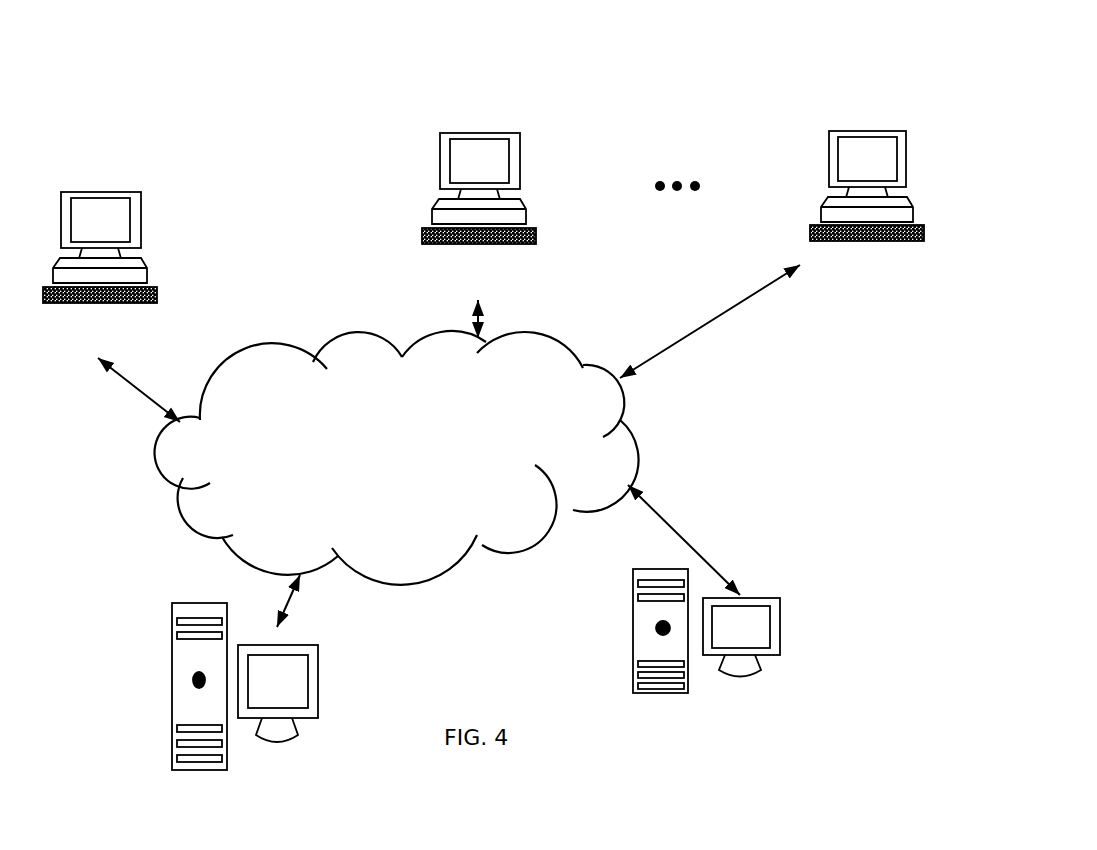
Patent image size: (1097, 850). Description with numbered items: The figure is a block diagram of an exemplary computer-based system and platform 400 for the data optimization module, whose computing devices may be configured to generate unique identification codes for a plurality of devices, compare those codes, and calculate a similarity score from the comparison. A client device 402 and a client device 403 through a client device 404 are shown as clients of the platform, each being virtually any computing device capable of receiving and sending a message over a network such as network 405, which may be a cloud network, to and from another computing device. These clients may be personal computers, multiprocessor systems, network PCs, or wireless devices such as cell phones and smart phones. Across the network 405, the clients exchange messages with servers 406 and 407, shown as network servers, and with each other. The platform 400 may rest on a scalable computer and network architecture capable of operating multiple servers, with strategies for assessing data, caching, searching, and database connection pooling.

The computer-based system and platform 400 is at (721, 66).
The client device 402 is at (143, 203).
The client device 403 is at (522, 144).
The client device 404 is at (909, 137).
The network 405 is at (397, 458).
The server 406 is at (322, 656).
The server 407 is at (784, 611).